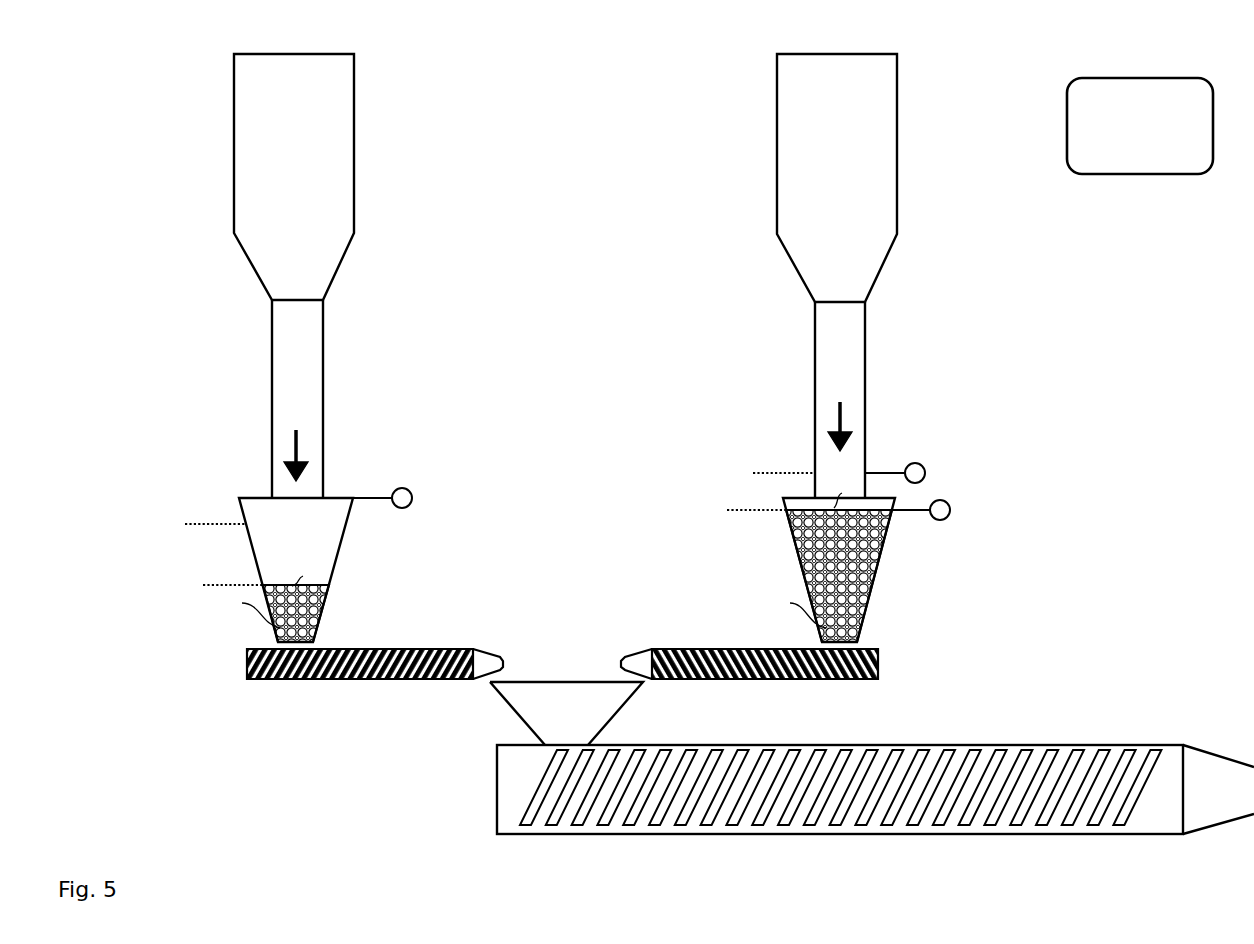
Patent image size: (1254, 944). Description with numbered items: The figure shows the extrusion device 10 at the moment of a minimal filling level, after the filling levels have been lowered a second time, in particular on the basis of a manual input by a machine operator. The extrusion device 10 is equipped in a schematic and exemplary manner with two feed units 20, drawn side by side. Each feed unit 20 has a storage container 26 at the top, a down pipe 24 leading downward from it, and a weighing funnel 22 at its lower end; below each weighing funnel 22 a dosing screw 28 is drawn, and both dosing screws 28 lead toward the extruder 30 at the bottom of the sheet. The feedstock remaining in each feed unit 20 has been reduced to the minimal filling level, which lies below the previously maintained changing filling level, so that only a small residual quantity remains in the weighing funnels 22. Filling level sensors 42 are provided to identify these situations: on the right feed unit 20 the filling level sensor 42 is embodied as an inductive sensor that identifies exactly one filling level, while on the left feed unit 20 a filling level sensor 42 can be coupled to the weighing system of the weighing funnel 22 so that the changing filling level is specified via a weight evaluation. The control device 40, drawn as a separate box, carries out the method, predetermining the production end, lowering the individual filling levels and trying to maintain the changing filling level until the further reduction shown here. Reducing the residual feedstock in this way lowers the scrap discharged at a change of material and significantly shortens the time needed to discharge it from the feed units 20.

The extrusion device 10 is at (110, 92).
The feed unit 20 is at (402, 180).
The weighing funnel 22 is at (318, 632).
The down pipe 24 is at (323, 345).
The storage container 26 is at (354, 73).
The dosing screw 28 is at (405, 648).
The extruder 30 is at (1088, 745).
The control device 40 is at (1128, 78).
The filling level sensor 42 is at (406, 488).